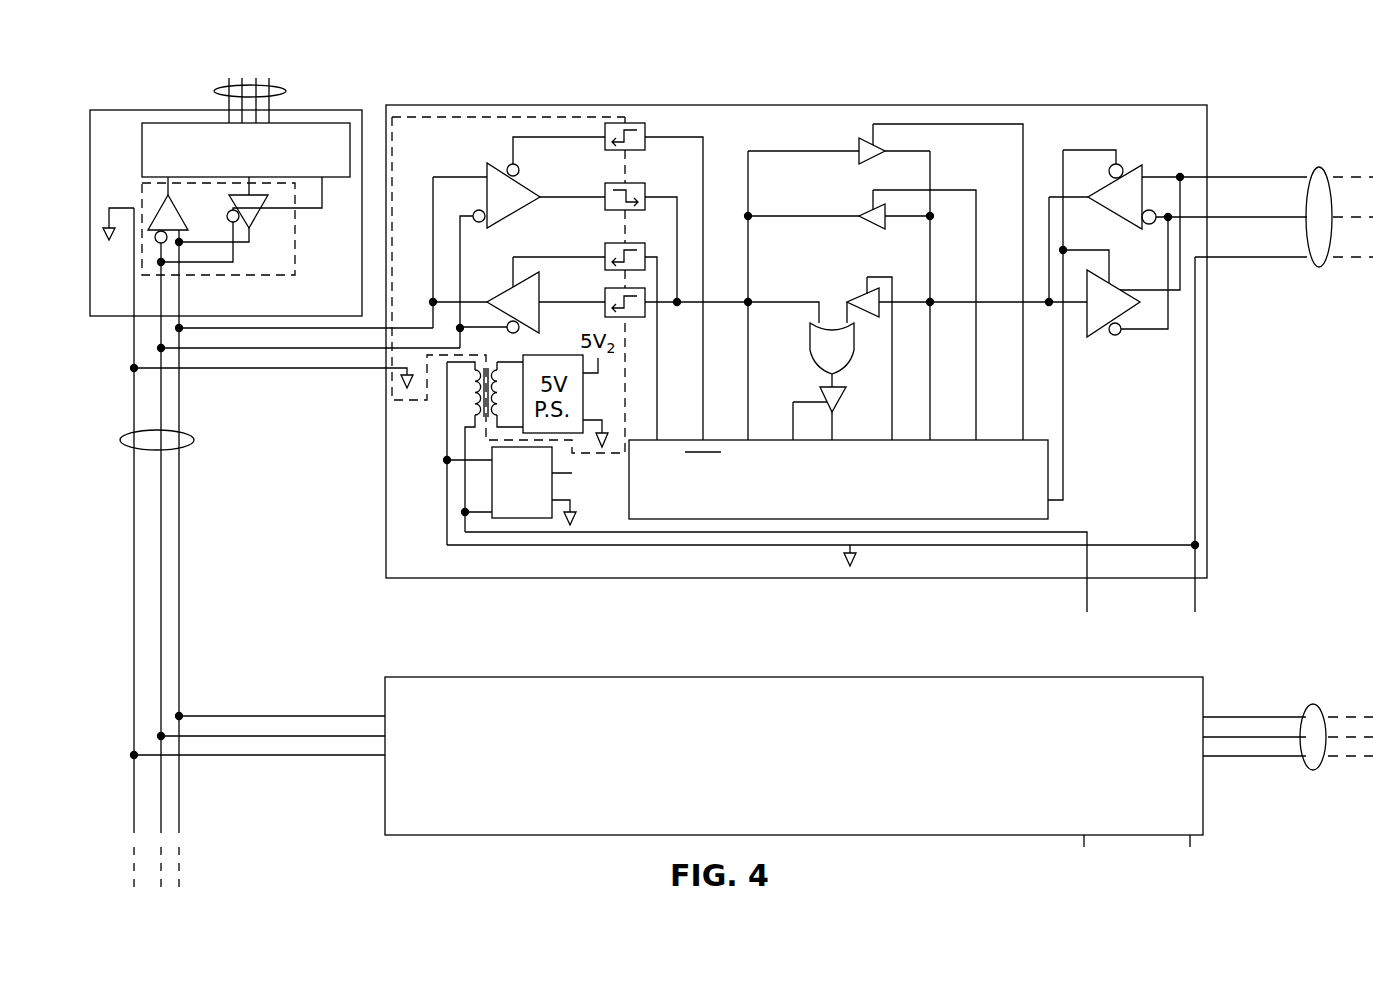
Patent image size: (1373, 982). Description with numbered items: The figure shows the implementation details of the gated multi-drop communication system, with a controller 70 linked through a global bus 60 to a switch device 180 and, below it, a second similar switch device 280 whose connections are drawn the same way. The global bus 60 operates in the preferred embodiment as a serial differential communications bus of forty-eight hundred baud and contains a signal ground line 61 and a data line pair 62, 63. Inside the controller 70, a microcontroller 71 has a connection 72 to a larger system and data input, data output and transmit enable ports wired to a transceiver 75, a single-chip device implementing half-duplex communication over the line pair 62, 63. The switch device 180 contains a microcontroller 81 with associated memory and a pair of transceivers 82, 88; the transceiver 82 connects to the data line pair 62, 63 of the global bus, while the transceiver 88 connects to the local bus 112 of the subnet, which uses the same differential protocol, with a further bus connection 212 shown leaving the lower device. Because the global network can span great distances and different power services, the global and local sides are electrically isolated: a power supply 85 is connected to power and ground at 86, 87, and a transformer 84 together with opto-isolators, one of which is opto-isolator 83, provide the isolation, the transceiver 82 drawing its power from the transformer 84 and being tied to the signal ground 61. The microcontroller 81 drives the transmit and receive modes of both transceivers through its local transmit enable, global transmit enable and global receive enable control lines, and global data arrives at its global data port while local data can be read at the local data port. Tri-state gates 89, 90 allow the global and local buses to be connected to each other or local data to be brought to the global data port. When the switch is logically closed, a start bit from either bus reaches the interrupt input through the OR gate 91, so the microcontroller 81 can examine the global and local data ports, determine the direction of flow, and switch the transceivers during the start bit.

The global bus 60 is at (120, 440).
The signal ground line 61 is at (134, 480).
The data line 62 is at (161, 528).
The data line 63 is at (182, 546).
The controller 70 is at (97, 316).
The microcontroller 71 is at (142, 143).
The connection 72 is at (286, 93).
The RS-485 transceiver 75 is at (297, 244).
The microcontroller 81 is at (786, 504).
The RS-485 transceiver 82 is at (492, 231).
The opto-isolator 83 is at (605, 152).
The transformer 84 is at (470, 402).
The power supply 85 is at (553, 487).
The power connection 86 is at (1087, 597).
The ground connection 87 is at (1197, 597).
The RS-485 transceiver 88 is at (1126, 231).
The gate 89 is at (856, 158).
The gate 90 is at (866, 228).
The OR gate 91 is at (810, 333).
The local bus 112 is at (1319, 168).
The switch device 180 is at (767, 105).
The local bus connection 212 is at (1314, 705).
The second switch device 280 is at (767, 678).